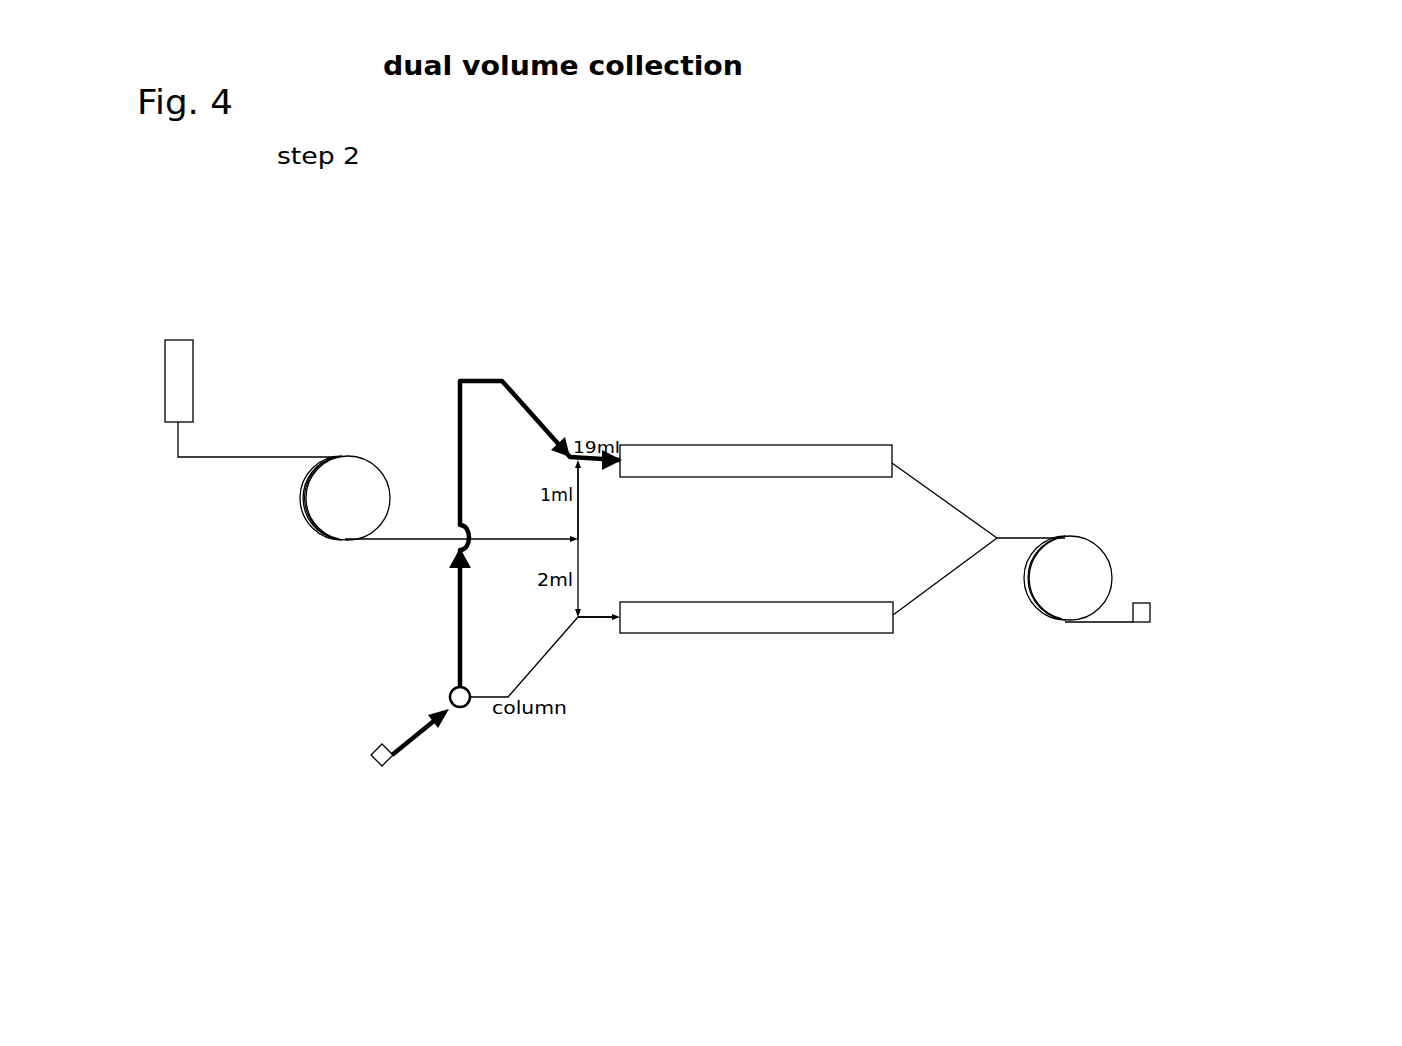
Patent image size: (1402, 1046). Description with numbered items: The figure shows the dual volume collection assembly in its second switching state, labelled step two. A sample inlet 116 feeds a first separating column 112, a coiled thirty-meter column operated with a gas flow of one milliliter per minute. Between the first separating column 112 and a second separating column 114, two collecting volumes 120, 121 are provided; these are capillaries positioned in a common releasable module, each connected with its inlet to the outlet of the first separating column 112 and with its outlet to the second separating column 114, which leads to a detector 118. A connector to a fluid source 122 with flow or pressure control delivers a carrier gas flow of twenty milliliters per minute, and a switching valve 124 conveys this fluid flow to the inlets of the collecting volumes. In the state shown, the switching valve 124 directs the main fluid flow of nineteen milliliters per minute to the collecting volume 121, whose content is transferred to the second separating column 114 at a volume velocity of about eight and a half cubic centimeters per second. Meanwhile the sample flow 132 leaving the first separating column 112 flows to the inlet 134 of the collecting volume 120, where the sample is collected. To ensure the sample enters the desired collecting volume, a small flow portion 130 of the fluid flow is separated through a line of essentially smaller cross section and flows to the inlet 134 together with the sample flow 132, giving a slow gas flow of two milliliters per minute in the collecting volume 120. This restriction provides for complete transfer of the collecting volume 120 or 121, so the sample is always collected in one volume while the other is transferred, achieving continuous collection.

The first separating column 112 is at (347, 473).
The second separating column 114 is at (1085, 563).
The sample inlet 116 is at (183, 358).
The detector 118 is at (1157, 627).
The collecting volume 120 is at (883, 617).
The collecting volume 121 is at (883, 443).
The fluid source 122 is at (375, 763).
The switching valve 124 is at (463, 705).
The flow portion 130 is at (578, 495).
The sample flow 132 is at (537, 542).
The inlet of the collecting volume 134 is at (593, 618).